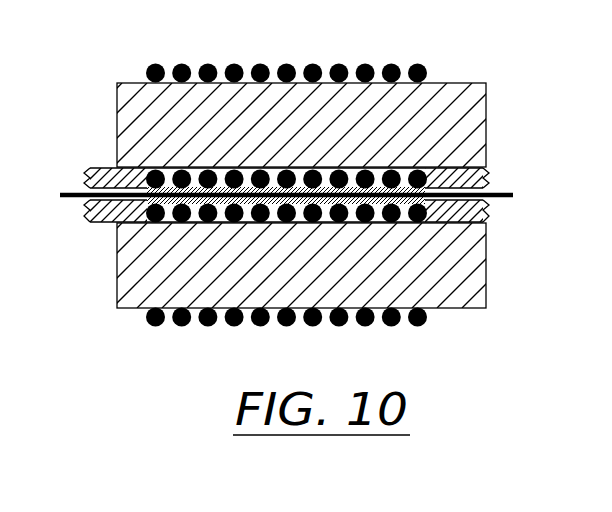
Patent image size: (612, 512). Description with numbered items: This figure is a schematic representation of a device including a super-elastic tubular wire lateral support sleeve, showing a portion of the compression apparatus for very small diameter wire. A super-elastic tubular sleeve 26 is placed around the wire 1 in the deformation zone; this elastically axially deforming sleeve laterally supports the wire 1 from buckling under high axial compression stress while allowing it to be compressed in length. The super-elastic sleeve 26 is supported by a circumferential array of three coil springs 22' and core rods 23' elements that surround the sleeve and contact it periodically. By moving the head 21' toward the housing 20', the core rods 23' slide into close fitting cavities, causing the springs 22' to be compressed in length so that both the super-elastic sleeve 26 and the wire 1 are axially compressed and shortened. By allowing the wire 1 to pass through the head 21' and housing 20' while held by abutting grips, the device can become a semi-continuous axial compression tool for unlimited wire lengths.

The wire 1 is at (77, 192).
The housing 20' is at (260, 214).
The head 21' is at (483, 170).
The coil springs 22' is at (286, 202).
The core rods 23' is at (287, 183).
The super-elastic tubular sleeve 26 is at (407, 178).